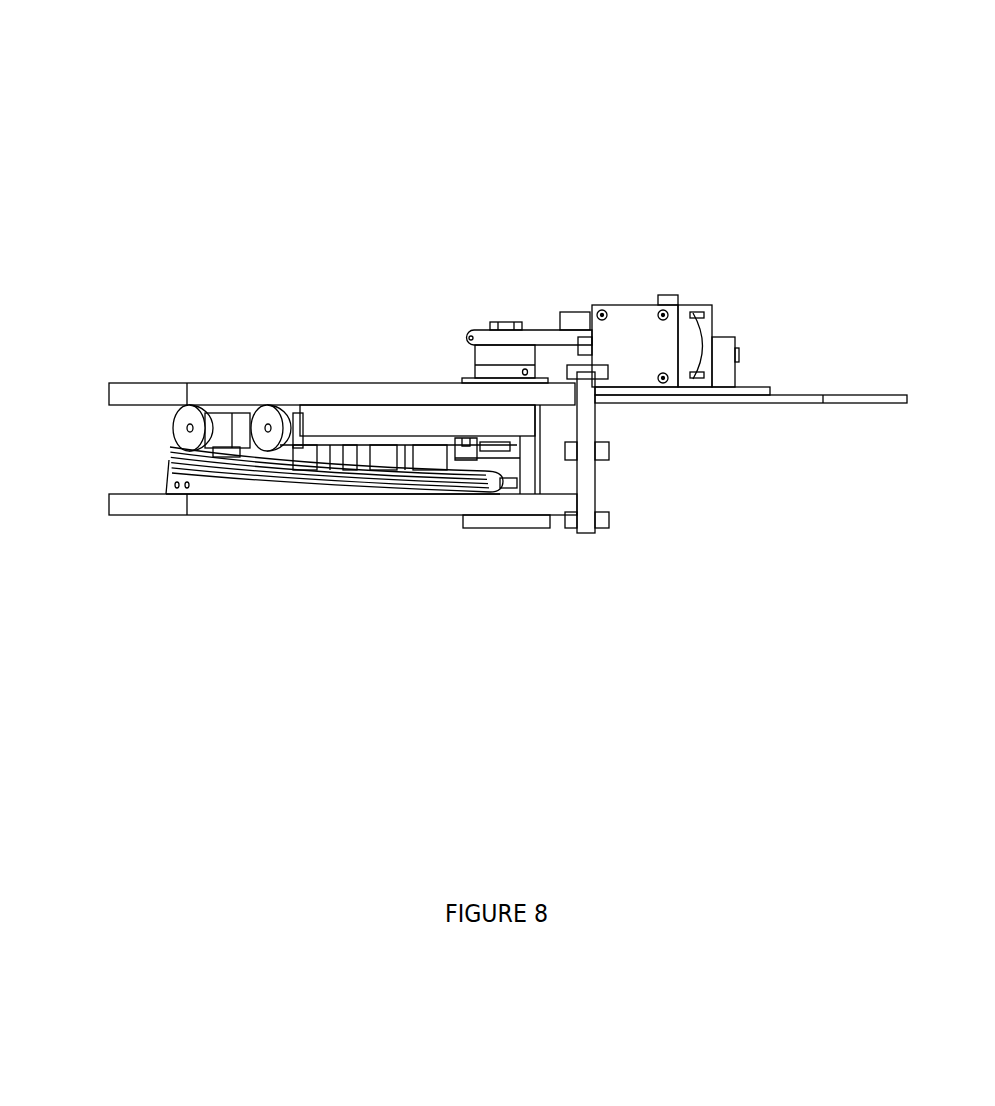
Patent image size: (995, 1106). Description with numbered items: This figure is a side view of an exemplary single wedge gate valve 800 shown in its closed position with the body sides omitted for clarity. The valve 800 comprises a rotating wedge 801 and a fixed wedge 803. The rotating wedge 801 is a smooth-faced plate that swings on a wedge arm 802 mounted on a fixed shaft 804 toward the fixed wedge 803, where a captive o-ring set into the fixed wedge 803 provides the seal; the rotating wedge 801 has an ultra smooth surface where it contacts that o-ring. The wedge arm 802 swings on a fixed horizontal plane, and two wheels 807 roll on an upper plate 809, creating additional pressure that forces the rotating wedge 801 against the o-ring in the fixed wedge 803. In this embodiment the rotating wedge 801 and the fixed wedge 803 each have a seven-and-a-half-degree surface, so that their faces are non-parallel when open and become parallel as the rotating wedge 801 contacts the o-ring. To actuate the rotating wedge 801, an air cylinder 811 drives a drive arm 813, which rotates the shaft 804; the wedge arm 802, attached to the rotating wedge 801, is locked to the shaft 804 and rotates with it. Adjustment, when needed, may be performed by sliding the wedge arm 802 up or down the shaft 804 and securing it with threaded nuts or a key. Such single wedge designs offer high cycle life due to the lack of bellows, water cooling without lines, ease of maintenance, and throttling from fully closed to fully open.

The single wedge gate valve 800 is at (407, 163).
The rotating wedge 801 is at (158, 447).
The wedge arm 802 is at (503, 423).
The fixed wedge 803 is at (211, 483).
The fixed shaft 804 is at (508, 473).
The wheels 807 is at (210, 400).
The upper plate 809 is at (155, 393).
The air cylinder 811 is at (636, 353).
The drive arm 813 is at (544, 320).